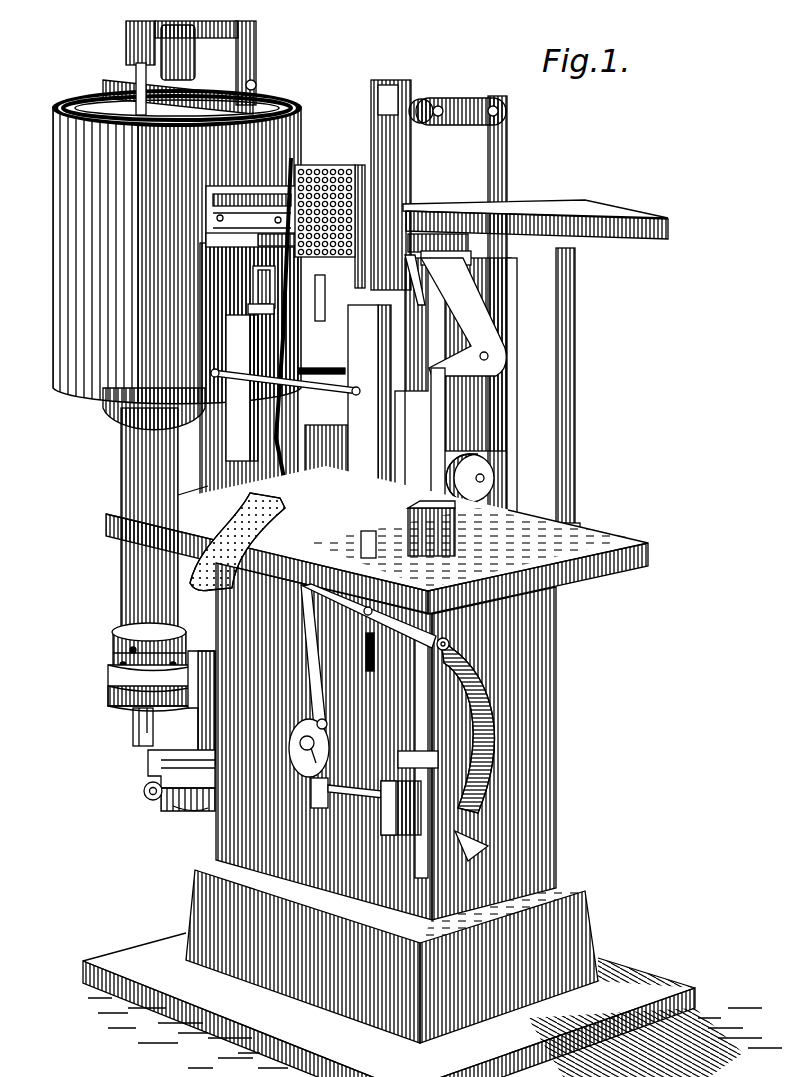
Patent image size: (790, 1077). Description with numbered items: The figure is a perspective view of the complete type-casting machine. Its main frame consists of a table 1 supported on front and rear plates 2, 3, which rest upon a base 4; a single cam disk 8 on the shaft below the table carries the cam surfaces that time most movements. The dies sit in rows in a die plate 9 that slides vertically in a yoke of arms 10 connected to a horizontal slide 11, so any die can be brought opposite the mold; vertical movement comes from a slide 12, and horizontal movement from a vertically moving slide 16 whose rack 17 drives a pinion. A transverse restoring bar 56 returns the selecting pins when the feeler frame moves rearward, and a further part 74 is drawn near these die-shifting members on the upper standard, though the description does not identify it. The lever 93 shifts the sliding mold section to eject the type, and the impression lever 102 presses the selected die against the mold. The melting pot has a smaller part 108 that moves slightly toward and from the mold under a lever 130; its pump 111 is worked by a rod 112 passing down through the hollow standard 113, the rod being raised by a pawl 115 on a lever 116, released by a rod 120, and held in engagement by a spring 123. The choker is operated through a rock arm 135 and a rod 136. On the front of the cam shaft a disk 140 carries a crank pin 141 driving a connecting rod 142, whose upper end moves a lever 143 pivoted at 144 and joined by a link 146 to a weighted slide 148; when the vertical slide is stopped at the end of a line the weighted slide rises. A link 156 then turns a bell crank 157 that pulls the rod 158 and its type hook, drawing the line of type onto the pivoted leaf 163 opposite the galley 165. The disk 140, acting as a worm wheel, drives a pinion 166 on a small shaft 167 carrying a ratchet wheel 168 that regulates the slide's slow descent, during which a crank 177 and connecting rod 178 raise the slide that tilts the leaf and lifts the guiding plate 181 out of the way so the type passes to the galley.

The table 1 is at (645, 539).
The front plate 2 is at (324, 741).
The rear plate 3 is at (544, 688).
The base 4 is at (392, 930).
The cam disk 8 is at (482, 704).
The die plate 9 is at (300, 178).
The arms 10 is at (288, 152).
The horizontal slide 11 is at (244, 268).
The slide 12 is at (314, 310).
The vertically moving slide 16 is at (251, 388).
The rack 17 is at (245, 298).
The restoring bar 56 is at (312, 390).
The bar 74 is at (212, 233).
The lever 93 is at (212, 200).
The impression lever 102 is at (296, 350).
The smaller part of melting pot 108 is at (366, 118).
The pump 111 is at (196, 72).
The rod 112 is at (128, 60).
The hollow standard 113 is at (120, 578).
The pawl 115 is at (136, 783).
The lever 116 is at (192, 806).
The rod 120 is at (176, 758).
The spring 123 is at (168, 803).
The lever 130 is at (486, 456).
The rock arm 135 is at (471, 88).
The rod 136 is at (499, 153).
The disk 140 is at (283, 750).
The crank pin 141 is at (320, 716).
The connecting rod 142 is at (300, 622).
The lever 143 is at (398, 632).
The pivot 144 is at (369, 616).
The link 146 is at (408, 688).
The weighted slide 148 is at (442, 634).
The link 156 is at (438, 410).
The bell crank 157 is at (492, 336).
The rod 158 is at (439, 269).
The leaf 163 is at (568, 290).
The galley 165 is at (642, 205).
The pinion 166 is at (303, 792).
The small shaft 167 is at (370, 803).
The ratchet wheel 168 is at (404, 833).
The crank 177 is at (412, 549).
The connecting rod 178 is at (330, 503).
The plate 181 is at (466, 250).